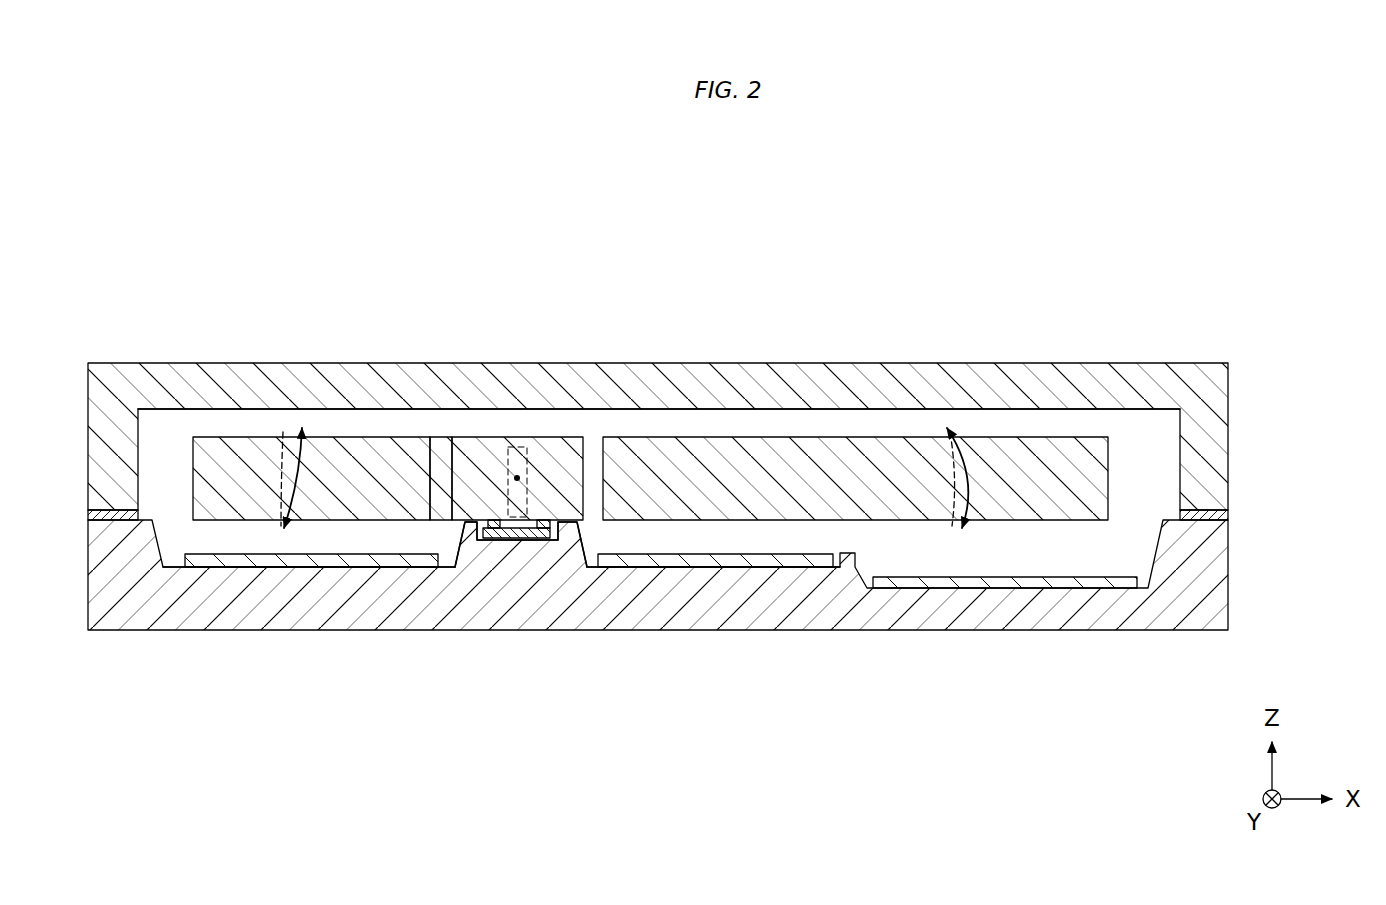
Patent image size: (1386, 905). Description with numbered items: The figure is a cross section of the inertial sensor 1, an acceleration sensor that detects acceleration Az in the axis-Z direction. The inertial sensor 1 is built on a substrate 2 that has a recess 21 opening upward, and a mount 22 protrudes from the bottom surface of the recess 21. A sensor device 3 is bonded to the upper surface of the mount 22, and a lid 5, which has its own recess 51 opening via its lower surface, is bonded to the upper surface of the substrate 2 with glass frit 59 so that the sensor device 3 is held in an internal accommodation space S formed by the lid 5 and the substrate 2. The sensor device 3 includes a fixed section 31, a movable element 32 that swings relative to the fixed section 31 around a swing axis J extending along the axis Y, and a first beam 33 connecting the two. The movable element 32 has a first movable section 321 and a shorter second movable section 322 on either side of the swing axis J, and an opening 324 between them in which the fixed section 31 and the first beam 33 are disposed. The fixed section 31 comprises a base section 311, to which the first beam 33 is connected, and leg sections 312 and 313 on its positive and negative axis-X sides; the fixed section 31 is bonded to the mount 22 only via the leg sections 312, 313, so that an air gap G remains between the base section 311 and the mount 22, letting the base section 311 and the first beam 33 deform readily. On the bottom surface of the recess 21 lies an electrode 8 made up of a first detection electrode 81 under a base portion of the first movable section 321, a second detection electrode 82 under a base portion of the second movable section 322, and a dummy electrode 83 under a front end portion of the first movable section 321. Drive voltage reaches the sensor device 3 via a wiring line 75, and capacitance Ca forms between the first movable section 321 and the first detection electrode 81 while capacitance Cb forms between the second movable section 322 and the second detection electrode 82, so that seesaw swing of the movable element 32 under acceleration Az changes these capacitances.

The inertial sensor 1 is at (1198, 232).
The substrate 2 is at (658, 625).
The recess 21 is at (152, 568).
The mount 22 is at (527, 568).
The sensor device 3 is at (650, 343).
The fixed section 31 is at (525, 343).
The base section 311 is at (520, 445).
The leg section 312 is at (570, 450).
The leg section 313 is at (463, 450).
The movable element 32 is at (650, 393).
The first movable section 321 is at (1030, 470).
The second movable section 322 is at (335, 470).
The opening 324 is at (440, 470).
The first beam 33 is at (518, 478).
The lid 5 is at (658, 388).
The recess 51 is at (728, 420).
The glass frit 59 is at (1213, 508).
The wiring line 75 is at (518, 540).
The electrode 8 is at (661, 623).
The first detection electrode 81 is at (748, 568).
The second detection electrode 82 is at (347, 568).
The dummy electrode 83 is at (1033, 589).
The accommodation space S is at (175, 450).
The swing axis J is at (482, 455).
The air gap G is at (590, 450).
The capacitance Ca is at (702, 540).
The capacitance Cb is at (312, 540).
The acceleration Az is at (1328, 447).